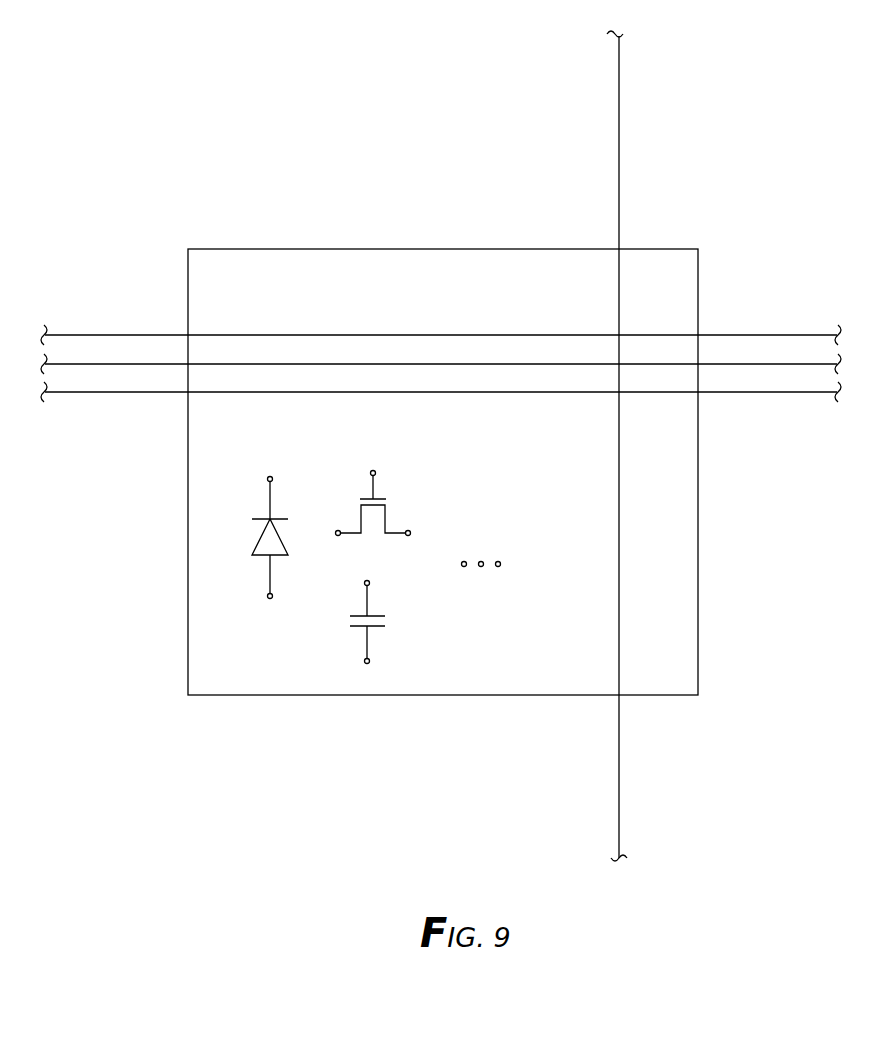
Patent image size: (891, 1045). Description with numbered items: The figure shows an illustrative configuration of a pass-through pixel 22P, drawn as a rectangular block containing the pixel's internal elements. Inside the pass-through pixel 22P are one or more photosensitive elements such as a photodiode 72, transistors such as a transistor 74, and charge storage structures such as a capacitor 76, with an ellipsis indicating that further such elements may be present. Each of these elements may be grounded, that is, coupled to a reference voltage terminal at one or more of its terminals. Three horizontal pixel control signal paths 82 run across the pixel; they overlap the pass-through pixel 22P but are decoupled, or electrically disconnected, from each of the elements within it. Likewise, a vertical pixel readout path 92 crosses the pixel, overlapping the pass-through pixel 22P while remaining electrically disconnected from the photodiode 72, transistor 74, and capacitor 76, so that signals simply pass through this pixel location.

The pixel readout path 92 is at (619, 63).
The pass-through pixel 22P is at (682, 249).
The pixel control signal paths 82 is at (823, 391).
The photodiode 72 is at (243, 556).
The transistor 74 is at (425, 483).
The capacitor 76 is at (398, 621).